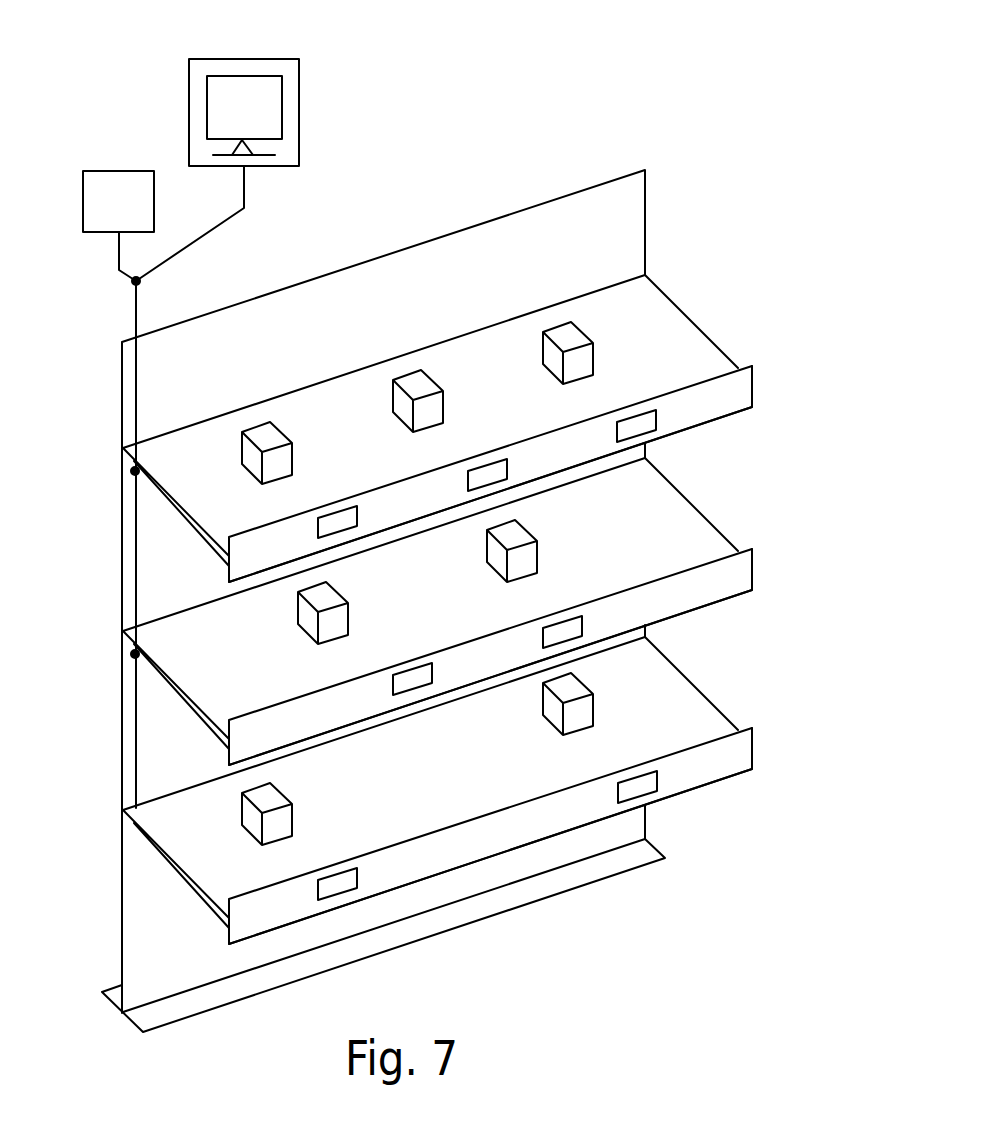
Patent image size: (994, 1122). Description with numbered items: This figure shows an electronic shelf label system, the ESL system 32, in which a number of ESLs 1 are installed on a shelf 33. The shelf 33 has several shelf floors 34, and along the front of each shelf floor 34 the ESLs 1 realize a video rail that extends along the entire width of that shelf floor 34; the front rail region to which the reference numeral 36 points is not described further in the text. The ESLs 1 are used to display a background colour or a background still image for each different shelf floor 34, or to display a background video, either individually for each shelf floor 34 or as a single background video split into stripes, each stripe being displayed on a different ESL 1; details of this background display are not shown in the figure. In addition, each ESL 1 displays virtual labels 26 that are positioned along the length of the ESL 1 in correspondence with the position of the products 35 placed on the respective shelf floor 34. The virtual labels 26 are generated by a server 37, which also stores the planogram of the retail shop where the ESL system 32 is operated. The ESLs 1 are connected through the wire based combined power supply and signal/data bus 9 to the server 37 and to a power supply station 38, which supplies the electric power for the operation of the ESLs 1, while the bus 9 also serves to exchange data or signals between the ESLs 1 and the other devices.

The ESL 1 is at (767, 379).
The combined power supply and signal/data bus 9 is at (133, 304).
The virtual label 26 is at (335, 526).
The ESL system 32 is at (676, 90).
The shelf 33 is at (655, 193).
The shelf floor 34 is at (684, 311).
The product 35 is at (262, 438).
The front edge rail 36 is at (753, 410).
The server 37 is at (299, 92).
The power supply station 38 is at (119, 171).